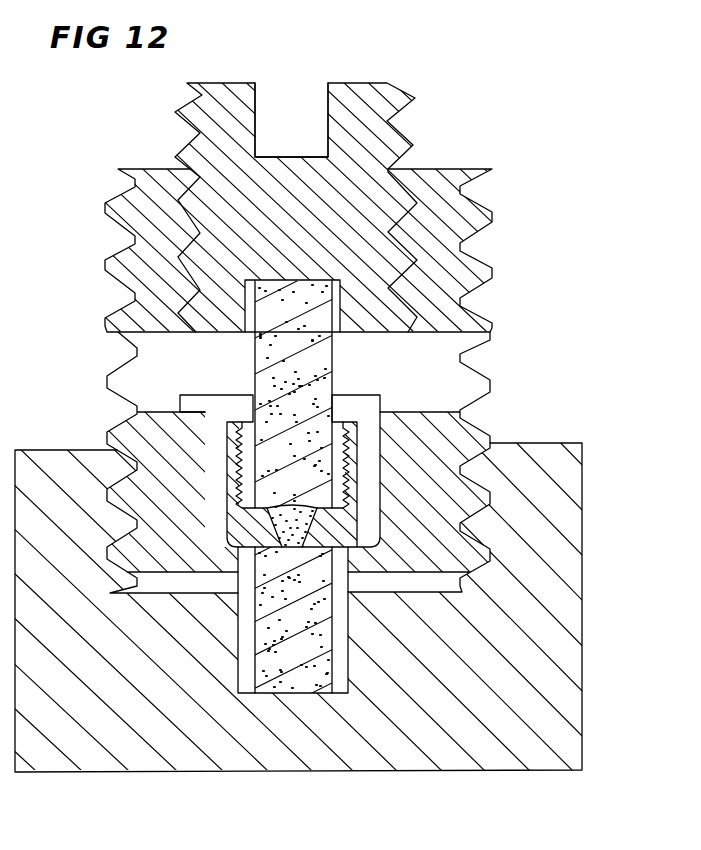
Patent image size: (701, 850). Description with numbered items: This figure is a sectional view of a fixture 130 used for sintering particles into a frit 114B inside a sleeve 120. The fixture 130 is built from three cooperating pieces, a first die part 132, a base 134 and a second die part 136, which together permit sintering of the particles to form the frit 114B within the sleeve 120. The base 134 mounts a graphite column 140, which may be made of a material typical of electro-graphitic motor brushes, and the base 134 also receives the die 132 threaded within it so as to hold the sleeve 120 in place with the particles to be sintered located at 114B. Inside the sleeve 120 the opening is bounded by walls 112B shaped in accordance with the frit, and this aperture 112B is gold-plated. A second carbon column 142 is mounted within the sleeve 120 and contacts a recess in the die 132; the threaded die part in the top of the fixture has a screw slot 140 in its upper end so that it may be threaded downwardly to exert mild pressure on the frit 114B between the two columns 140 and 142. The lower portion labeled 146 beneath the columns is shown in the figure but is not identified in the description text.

The fixture 130 is at (352, 55).
The graphite column 140 is at (273, 96).
The second die part 136 is at (400, 95).
The second carbon column 142 is at (262, 357).
The sleeve 120 is at (383, 410).
The first die part 132 is at (462, 437).
The base 134 is at (571, 564).
The frit 114B is at (268, 524).
The walls 112B is at (320, 526).
The lower pin portion 146 is at (272, 676).